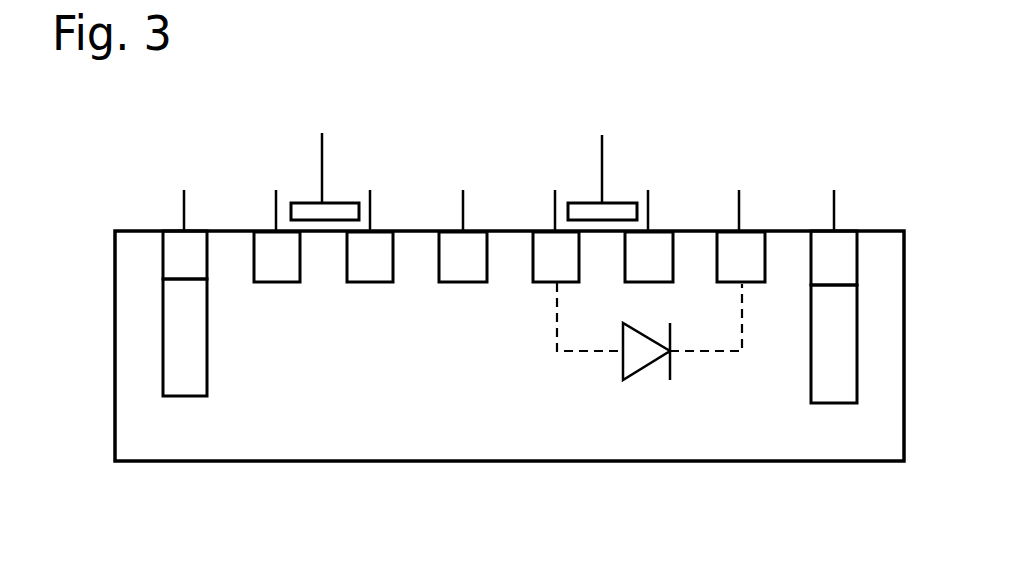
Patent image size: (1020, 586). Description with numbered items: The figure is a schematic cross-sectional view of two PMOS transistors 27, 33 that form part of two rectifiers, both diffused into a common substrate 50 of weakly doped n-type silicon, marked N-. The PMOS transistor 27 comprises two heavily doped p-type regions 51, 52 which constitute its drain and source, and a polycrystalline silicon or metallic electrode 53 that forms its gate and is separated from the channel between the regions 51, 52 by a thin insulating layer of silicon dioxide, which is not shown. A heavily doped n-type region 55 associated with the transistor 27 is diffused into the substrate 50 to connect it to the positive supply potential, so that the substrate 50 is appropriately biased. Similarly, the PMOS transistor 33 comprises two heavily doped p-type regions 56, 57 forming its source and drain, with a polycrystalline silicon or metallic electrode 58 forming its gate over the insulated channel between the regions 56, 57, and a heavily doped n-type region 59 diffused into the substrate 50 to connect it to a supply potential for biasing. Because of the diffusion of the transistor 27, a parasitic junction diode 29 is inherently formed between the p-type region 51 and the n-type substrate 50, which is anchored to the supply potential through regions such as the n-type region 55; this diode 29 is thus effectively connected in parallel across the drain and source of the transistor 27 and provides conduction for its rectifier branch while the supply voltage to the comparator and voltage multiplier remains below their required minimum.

The PMOS transistor 27 is at (667, 138).
The parasitic junction diode 29 is at (642, 357).
The PMOS transistor 33 is at (250, 122).
The substrate 50 is at (583, 433).
The heavily doped p-type region 51 is at (542, 283).
The heavily doped p-type region 52 is at (633, 283).
The gate electrode 53 is at (603, 212).
The heavily doped n-type region 55 is at (730, 283).
The heavily doped p-type region 56 is at (368, 283).
The heavily doped p-type region 57 is at (463, 283).
The gate electrode 58 is at (324, 212).
The heavily doped n-type region 59 is at (277, 283).